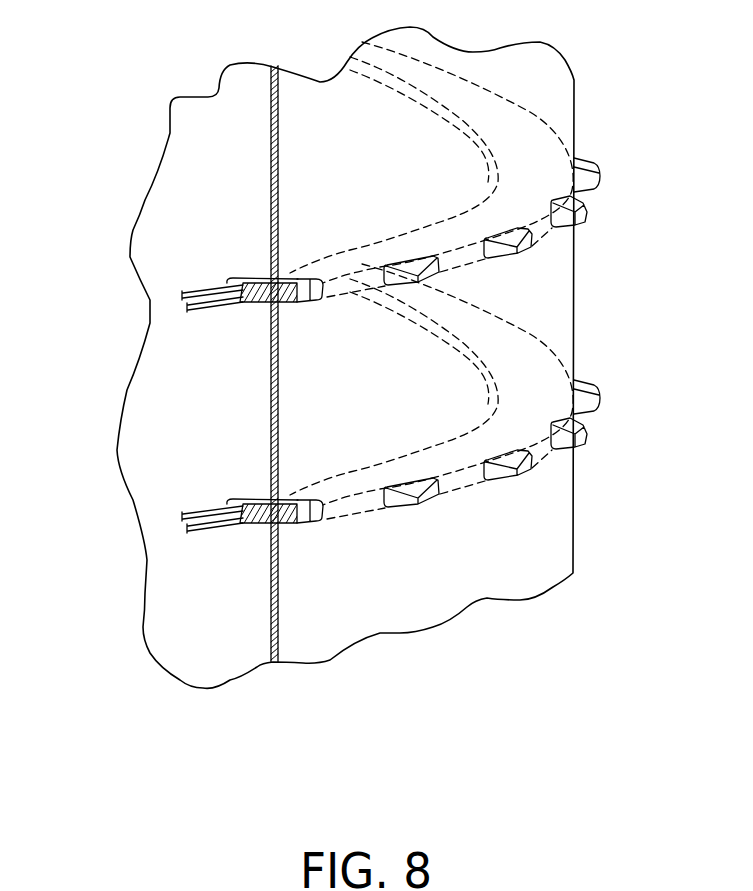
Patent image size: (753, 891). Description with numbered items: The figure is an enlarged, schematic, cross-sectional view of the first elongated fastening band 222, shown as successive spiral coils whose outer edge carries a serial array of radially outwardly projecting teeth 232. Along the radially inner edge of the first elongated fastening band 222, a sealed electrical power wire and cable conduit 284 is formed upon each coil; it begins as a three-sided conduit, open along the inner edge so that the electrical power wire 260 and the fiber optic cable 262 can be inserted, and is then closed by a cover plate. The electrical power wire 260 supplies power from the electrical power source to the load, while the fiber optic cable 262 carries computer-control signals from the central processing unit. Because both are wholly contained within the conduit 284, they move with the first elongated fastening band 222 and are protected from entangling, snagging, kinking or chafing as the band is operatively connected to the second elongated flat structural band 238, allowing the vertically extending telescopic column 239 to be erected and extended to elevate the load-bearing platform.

The first elongated fastening band 222 is at (400, 90).
The radially outwardly projecting teeth 232 is at (523, 478).
The second elongated flat structural band 238 is at (277, 621).
The vertically extending telescopic column 239 is at (538, 297).
The electrical power wire 260 is at (190, 306).
The fiber optic cable 262 is at (184, 292).
The sealed electrical power wire and cable conduit 284 is at (233, 279).